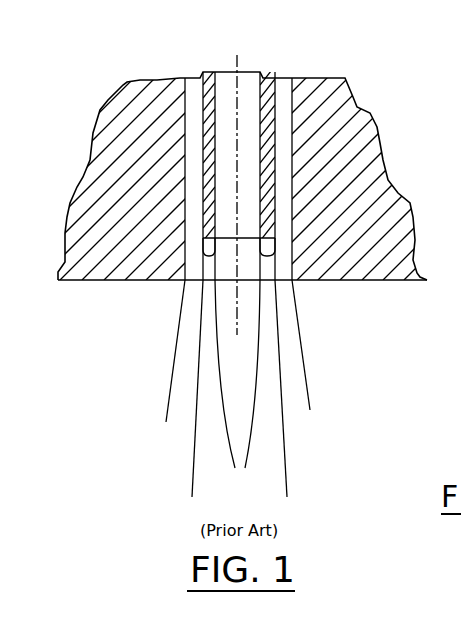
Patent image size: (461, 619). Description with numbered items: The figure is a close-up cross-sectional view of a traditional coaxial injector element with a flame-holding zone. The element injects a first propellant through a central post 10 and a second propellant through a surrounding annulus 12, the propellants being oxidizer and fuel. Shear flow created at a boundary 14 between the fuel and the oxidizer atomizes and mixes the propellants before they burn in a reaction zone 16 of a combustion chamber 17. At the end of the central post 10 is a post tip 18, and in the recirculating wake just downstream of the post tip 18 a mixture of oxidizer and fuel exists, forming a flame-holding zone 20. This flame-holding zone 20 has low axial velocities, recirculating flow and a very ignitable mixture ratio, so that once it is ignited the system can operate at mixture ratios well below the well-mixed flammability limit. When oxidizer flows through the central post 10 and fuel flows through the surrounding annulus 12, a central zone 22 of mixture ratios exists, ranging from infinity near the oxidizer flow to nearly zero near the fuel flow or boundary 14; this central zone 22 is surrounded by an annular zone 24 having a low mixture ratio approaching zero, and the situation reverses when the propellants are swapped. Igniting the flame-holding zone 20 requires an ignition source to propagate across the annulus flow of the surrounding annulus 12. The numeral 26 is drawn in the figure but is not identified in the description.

The central post 10 is at (275, 80).
The surrounding annulus 12 is at (190, 92).
The boundary 14 is at (195, 470).
The reaction zone 16 is at (270, 452).
The combustion chamber 17 is at (398, 413).
The post tip 18 is at (187, 250).
The flame-holding zone 20 is at (207, 282).
The central zone 22 is at (211, 378).
The annular zone 24 is at (209, 356).
The nozzle face 26 is at (82, 282).